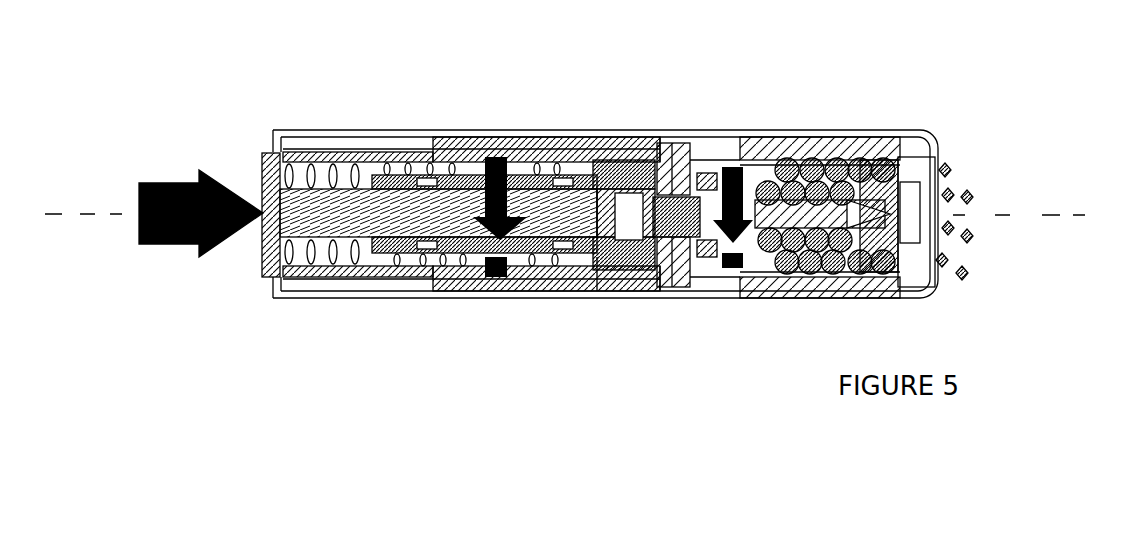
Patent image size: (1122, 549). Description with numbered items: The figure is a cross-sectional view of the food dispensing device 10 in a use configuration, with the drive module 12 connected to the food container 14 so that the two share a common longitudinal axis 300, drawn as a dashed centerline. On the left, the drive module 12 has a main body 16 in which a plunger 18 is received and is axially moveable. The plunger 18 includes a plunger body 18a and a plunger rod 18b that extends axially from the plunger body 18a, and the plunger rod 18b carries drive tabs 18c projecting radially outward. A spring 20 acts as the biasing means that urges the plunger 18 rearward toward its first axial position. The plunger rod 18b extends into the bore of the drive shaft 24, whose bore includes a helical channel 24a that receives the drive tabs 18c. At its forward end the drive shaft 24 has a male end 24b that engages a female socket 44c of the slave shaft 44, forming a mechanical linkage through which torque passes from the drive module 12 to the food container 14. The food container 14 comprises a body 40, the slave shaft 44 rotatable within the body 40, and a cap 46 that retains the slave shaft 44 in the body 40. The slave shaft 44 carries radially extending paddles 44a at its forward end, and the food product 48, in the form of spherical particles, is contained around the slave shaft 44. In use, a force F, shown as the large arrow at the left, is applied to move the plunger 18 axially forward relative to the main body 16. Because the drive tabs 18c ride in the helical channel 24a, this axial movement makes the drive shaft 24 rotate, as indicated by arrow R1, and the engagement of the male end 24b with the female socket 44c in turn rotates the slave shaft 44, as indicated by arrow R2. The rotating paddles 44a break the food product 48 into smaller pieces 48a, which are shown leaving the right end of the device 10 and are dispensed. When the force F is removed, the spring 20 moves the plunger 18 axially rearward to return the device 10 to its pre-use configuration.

The food dispensing device 10 is at (812, 92).
The drive module 12 is at (507, 130).
The food container 14 is at (917, 131).
The main body 16 is at (305, 300).
The plunger 18 is at (263, 190).
The plunger body 18a is at (340, 164).
The plunger rod 18b is at (379, 202).
The drive tabs 18c is at (560, 178).
The spring 20 is at (397, 255).
The drive shaft 24 is at (470, 200).
The helical channel 24a is at (577, 180).
The male end 24b is at (702, 268).
The body 40 is at (770, 132).
The slave shaft 44 is at (825, 240).
The paddles 44a is at (872, 185).
The female socket 44c is at (708, 300).
The cap 46 is at (915, 290).
The food product 48 is at (777, 270).
The smaller pieces 48a is at (966, 283).
The common longitudinal axis 300 is at (1047, 212).
The force F is at (172, 250).
The rotation of the drive shaft R1 is at (470, 200).
The rotation of the slave shaft R2 is at (708, 300).